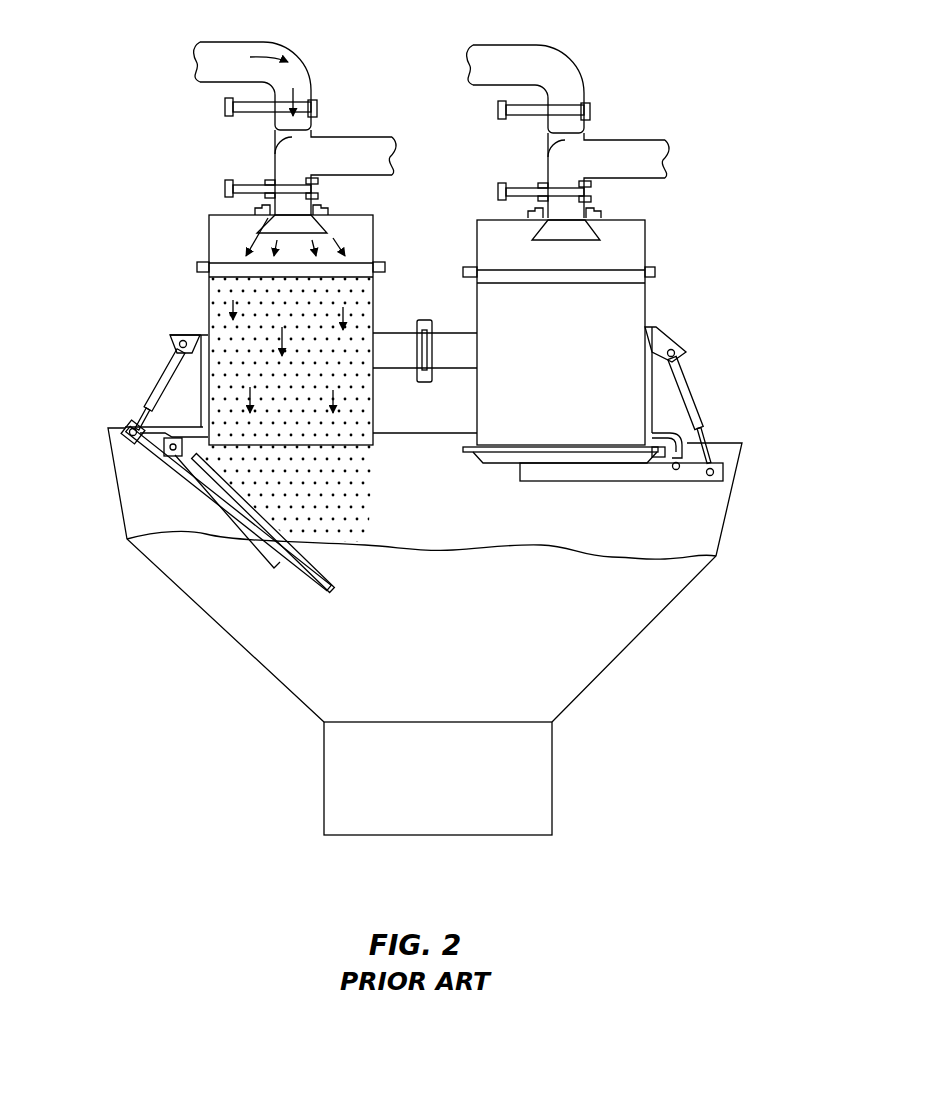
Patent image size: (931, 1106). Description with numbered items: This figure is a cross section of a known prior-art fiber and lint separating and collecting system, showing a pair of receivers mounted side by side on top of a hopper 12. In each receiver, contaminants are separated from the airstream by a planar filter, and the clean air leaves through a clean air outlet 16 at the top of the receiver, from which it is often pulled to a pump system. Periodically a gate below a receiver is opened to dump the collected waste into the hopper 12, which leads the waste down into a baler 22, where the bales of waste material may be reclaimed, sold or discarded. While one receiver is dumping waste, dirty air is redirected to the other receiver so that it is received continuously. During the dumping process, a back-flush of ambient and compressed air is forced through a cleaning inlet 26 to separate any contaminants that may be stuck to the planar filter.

The hopper 12 is at (708, 520).
The clean air outlet 16 is at (290, 210).
The baler 22 is at (525, 770).
The cleaning inlet 26 is at (297, 80).